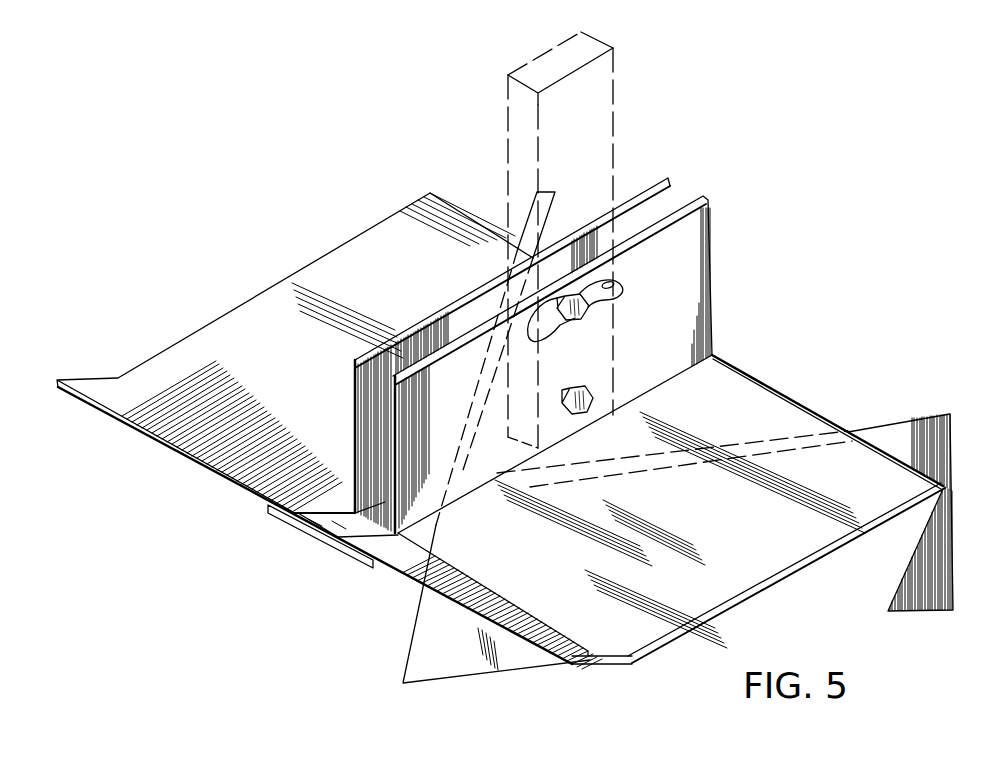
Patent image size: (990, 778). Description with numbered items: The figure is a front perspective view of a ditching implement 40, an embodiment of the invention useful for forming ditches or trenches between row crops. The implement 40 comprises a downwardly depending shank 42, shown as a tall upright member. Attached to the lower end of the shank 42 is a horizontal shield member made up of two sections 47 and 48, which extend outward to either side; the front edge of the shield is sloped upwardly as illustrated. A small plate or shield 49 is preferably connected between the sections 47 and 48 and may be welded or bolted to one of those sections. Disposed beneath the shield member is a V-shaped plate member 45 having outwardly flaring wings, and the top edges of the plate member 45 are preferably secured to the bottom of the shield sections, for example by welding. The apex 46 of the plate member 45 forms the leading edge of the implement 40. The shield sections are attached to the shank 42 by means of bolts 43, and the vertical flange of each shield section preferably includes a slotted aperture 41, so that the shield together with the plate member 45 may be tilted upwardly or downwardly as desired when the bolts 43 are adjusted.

The ditching implement 40 is at (375, 190).
The slotted aperture 41 is at (622, 285).
The shank 42 is at (603, 169).
The bolts 43 is at (581, 315).
The V-shaped plate member 45 is at (938, 580).
The apex 46 is at (417, 607).
The shield section 47 is at (686, 407).
The shield section 48 is at (250, 329).
The small plate or shield 49 is at (308, 542).